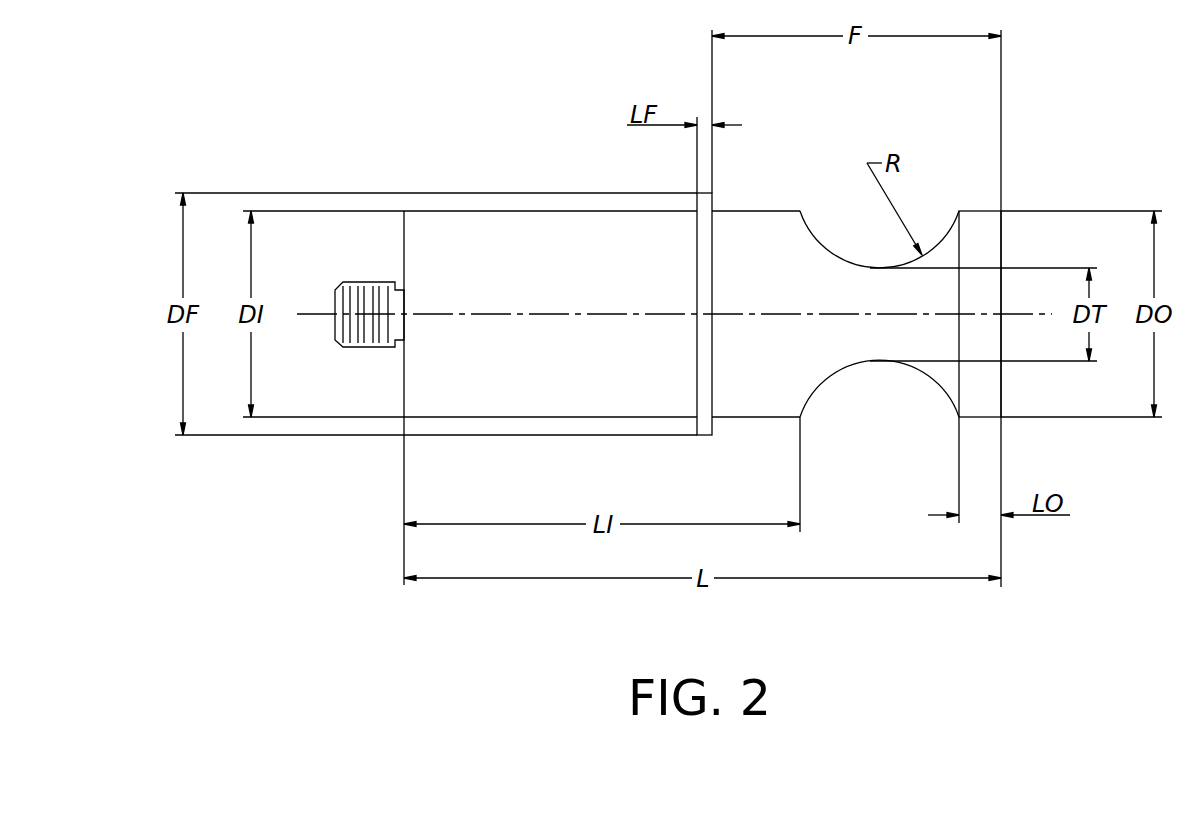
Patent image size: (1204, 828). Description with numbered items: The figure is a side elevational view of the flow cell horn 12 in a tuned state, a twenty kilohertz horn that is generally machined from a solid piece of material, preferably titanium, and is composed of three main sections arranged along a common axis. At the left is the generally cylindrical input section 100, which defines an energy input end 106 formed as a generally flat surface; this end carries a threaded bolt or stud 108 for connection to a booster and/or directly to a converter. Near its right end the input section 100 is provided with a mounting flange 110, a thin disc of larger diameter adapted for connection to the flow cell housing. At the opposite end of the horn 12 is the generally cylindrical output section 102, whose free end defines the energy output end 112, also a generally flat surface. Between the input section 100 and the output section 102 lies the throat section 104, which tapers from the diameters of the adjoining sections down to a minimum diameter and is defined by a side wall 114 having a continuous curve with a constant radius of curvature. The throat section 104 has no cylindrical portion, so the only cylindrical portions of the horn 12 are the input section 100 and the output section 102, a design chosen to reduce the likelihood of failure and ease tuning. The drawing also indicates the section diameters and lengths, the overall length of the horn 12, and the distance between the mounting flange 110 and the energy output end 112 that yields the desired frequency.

The horn 12 is at (740, 223).
The input section 100 is at (510, 223).
The output section 102 is at (980, 225).
The throat section 104 is at (887, 340).
The energy input end 106 is at (404, 229).
The threaded bolt or stud 108 is at (357, 331).
The mounting flange 110 is at (703, 435).
The energy output end 112 is at (1000, 255).
The side wall 114 is at (833, 378).